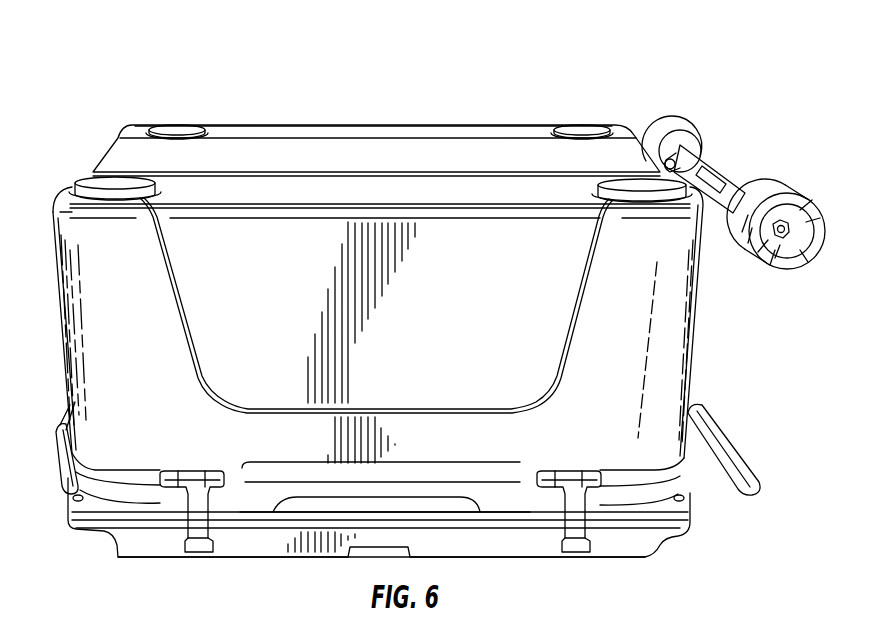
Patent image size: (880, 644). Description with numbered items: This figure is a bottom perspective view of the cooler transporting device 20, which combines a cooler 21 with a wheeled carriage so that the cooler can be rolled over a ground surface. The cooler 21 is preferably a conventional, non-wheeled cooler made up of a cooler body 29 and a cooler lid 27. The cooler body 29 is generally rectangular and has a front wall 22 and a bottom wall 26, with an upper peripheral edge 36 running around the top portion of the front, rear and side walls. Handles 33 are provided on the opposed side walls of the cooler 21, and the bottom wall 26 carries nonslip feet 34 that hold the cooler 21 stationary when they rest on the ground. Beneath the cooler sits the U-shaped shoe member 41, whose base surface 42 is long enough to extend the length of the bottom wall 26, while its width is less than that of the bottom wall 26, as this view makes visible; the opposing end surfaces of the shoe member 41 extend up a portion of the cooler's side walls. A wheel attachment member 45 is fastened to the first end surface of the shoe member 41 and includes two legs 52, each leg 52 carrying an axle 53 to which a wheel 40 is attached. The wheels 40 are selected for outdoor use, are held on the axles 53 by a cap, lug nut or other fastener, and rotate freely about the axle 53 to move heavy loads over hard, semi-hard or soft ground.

The cooler transporting device 20 is at (754, 149).
The cooler 21 is at (52, 388).
The front wall 22 is at (230, 293).
The bottom wall 26 is at (430, 133).
The cooler lid 27 is at (492, 539).
The cooler body 29 is at (712, 330).
The handles 33 is at (63, 445).
The nonslip feet 34 is at (583, 125).
The upper peripheral edge 36 is at (628, 517).
The wheels 40 is at (663, 128).
The U-shaped shoe member 41 is at (147, 155).
The base surface 42 is at (320, 152).
The wheel attachment member 45 is at (717, 158).
The legs 52 is at (710, 155).
The axle 53 is at (778, 243).